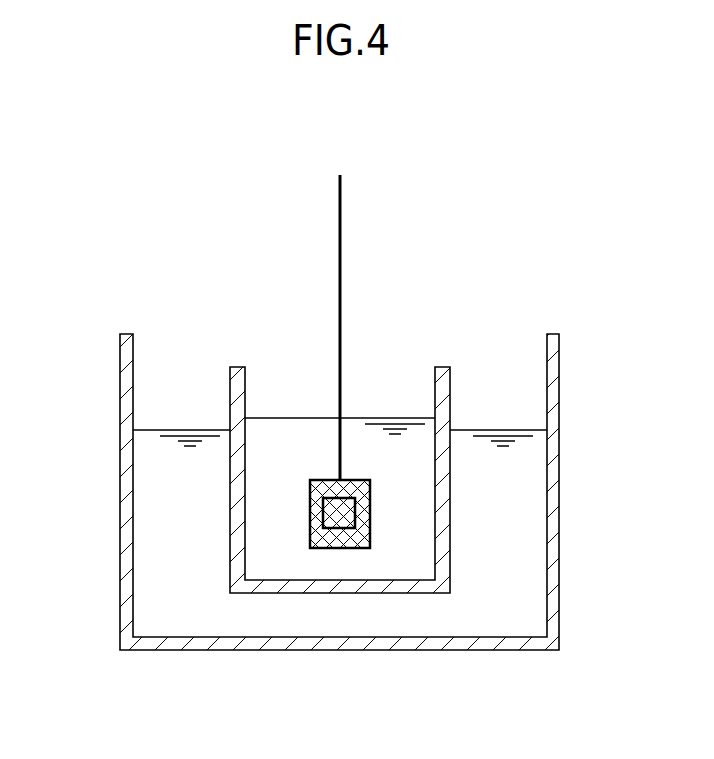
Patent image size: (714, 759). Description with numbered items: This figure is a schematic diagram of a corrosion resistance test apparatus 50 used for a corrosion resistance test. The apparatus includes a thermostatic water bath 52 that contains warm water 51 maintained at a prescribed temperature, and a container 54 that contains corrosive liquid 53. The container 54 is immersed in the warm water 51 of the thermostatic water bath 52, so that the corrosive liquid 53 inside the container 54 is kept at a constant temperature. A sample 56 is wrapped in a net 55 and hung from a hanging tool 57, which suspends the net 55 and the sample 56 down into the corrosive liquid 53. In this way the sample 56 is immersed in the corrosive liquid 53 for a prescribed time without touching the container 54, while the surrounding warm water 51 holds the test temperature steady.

The corrosion resistance test apparatus 50 is at (94, 248).
The warm water 51 is at (181, 430).
The thermostatic water bath 52 is at (559, 590).
The corrosive liquid 53 is at (296, 418).
The container 54 is at (450, 545).
The net 55 is at (360, 480).
The sample 56 is at (370, 507).
The hanging tool 57 is at (343, 277).